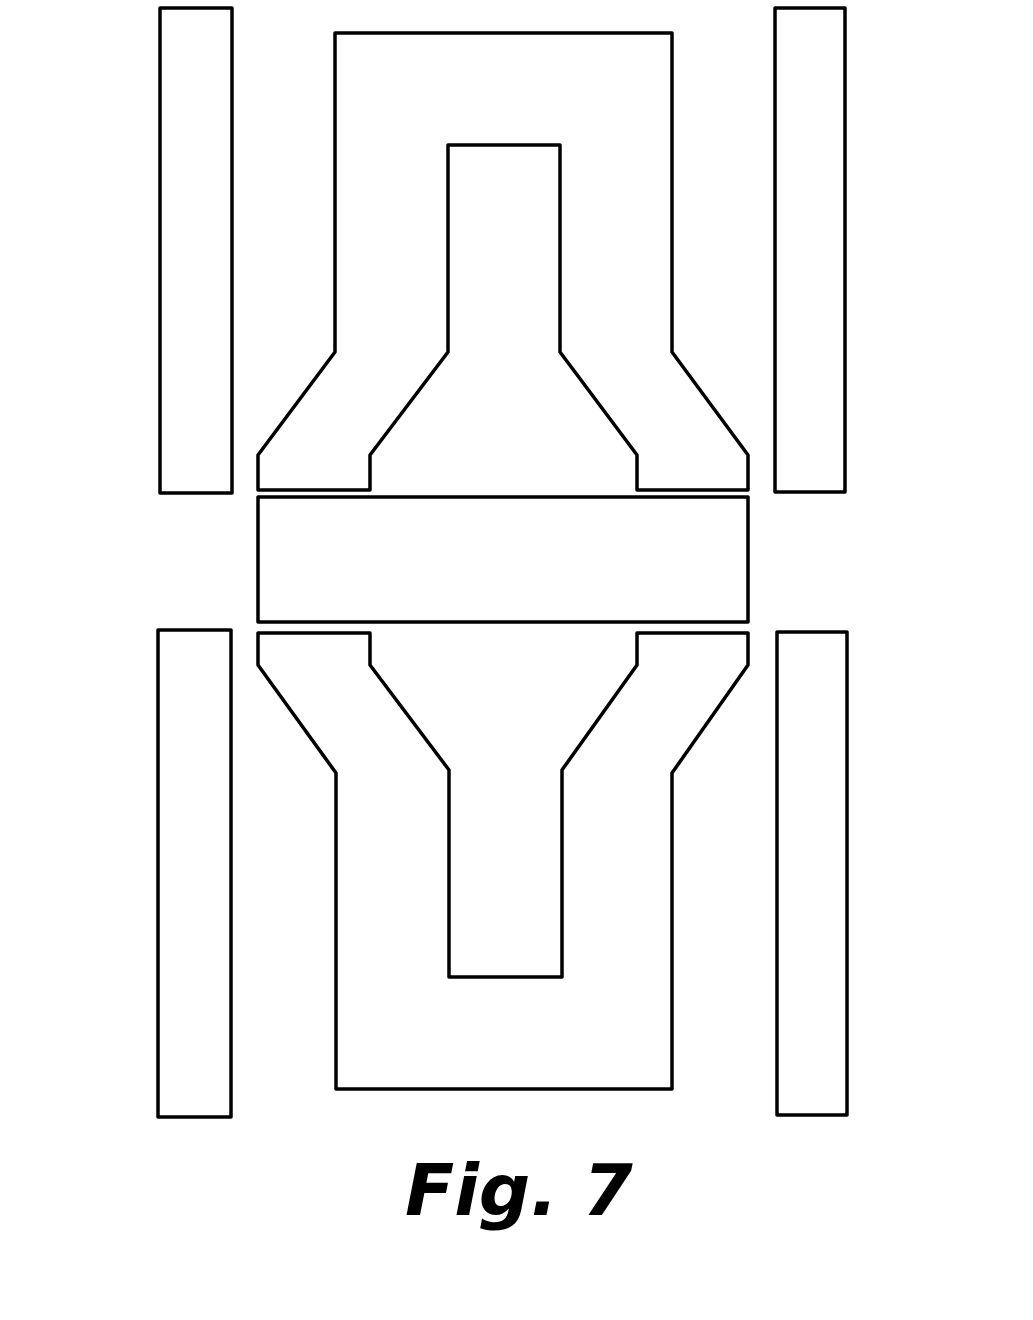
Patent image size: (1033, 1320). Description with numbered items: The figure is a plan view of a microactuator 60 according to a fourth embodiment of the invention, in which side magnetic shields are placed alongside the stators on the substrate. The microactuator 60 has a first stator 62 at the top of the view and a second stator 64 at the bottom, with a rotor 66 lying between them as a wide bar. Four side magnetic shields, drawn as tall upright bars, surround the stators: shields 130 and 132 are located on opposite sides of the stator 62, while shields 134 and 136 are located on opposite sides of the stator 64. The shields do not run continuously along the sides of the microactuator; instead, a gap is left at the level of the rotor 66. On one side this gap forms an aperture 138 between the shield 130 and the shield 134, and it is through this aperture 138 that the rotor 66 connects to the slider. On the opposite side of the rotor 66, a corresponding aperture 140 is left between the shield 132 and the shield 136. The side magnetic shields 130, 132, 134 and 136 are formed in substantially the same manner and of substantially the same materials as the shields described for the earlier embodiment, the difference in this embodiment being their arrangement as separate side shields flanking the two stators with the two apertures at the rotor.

The microactuator 60 is at (318, 854).
The stator 62 is at (672, 210).
The stator 64 is at (672, 897).
The rotor 66 is at (498, 497).
The side magnetic shield 130 is at (846, 210).
The side magnetic shield 132 is at (180, 248).
The side magnetic shield 134 is at (847, 822).
The side magnetic shield 136 is at (158, 820).
The aperture 138 is at (828, 563).
The aperture 140 is at (232, 560).